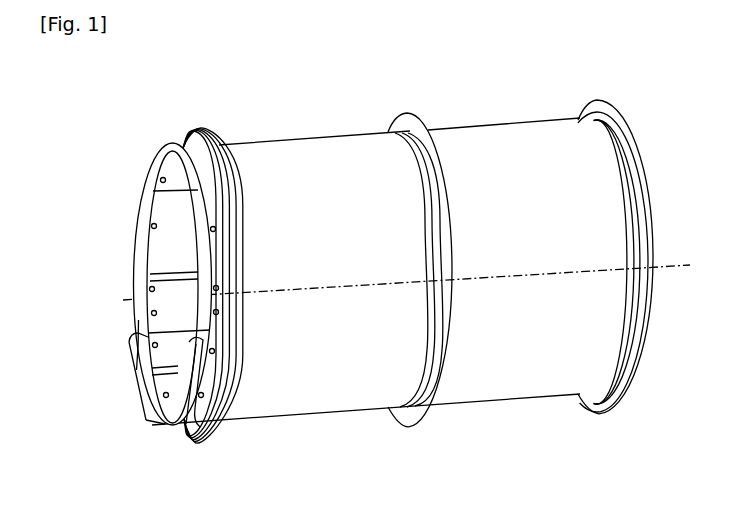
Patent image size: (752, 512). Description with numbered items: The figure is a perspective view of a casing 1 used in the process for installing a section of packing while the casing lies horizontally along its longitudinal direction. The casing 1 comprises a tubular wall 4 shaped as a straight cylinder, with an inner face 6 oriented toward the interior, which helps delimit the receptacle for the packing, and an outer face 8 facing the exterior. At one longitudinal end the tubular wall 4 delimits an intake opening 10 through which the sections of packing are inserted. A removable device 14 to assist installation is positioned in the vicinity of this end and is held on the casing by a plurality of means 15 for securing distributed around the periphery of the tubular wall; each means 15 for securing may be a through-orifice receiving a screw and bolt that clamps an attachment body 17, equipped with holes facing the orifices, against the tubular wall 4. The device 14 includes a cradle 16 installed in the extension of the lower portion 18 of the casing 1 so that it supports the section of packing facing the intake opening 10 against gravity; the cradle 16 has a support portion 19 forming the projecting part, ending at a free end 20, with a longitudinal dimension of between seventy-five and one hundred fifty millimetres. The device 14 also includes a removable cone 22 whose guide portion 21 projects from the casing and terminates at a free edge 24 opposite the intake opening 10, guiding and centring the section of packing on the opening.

The casing 1 is at (114, 129).
The tubular wall 4 is at (370, 380).
The inner face 6 is at (163, 267).
The outer face 8 is at (567, 147).
The intake opening 10 is at (148, 336).
The device to assist installation 14 is at (127, 319).
The means for securing 15 is at (161, 181).
The cradle 16 is at (153, 424).
The attachment body 17 is at (220, 142).
The lower portion 18 is at (448, 397).
The support portion 19 is at (189, 342).
The free end 20 is at (135, 387).
The guide portion 21 is at (190, 143).
The removable cone 22 is at (153, 157).
The free edge 24 is at (168, 138).